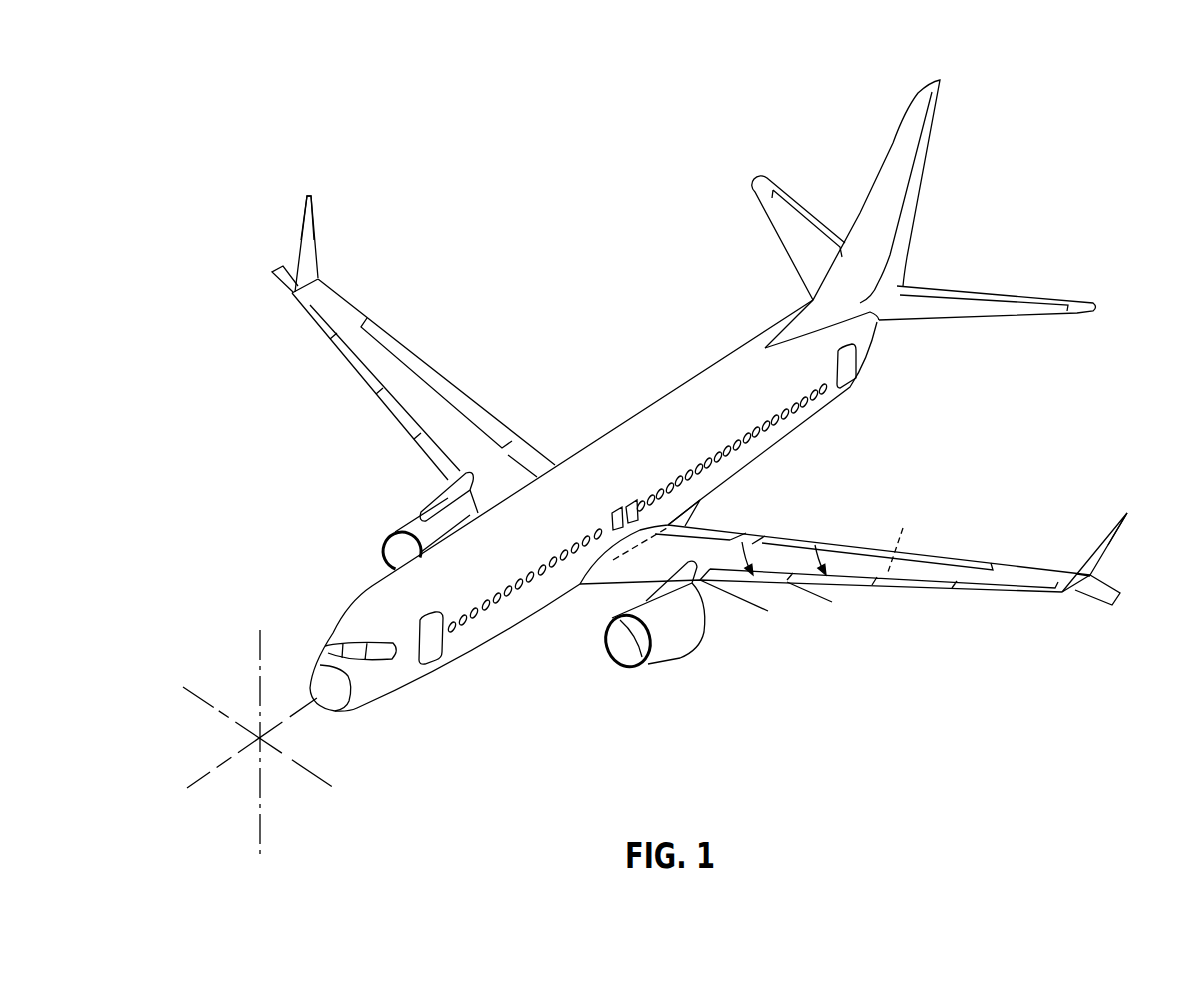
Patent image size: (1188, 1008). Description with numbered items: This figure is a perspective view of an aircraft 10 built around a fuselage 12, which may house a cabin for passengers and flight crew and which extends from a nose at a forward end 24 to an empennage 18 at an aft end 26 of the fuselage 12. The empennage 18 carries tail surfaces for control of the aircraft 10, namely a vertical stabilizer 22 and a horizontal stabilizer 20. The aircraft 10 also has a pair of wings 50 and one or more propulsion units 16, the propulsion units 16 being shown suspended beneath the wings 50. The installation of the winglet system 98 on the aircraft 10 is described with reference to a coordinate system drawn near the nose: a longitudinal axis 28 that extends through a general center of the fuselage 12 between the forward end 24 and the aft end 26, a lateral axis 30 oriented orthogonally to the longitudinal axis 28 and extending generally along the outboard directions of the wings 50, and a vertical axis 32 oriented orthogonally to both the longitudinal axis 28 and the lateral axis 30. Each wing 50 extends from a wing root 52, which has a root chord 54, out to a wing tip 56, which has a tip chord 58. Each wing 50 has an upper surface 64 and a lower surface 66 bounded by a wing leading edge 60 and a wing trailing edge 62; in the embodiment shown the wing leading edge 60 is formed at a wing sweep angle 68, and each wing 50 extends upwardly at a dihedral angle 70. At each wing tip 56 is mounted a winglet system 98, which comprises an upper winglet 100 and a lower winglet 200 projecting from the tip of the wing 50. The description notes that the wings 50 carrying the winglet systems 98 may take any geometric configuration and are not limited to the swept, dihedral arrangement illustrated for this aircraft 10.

The aircraft 10 is at (505, 156).
The fuselage 12 is at (363, 602).
The propulsion unit 16 is at (625, 663).
The empennage 18 is at (905, 268).
The horizontal stabilizer 20 is at (1030, 322).
The vertical stabilizer 22 is at (902, 113).
The forward end 24 is at (353, 712).
The aft end 26 is at (868, 352).
The longitudinal axis 28 is at (208, 773).
The lateral axis 30 is at (213, 708).
The vertical axis 32 is at (258, 688).
The wing 50 is at (375, 393).
The wing root 52 is at (692, 508).
The root chord 54 is at (610, 570).
The wing tip 56 is at (318, 280).
The tip chord 58 is at (305, 198).
The wing leading edge 60 is at (925, 588).
The wing trailing edge 62 is at (953, 560).
The upper surface 64 is at (782, 555).
The lower surface 66 is at (902, 537).
The wing sweep angle 68 is at (819, 612).
The dihedral angle 70 is at (744, 612).
The winglet system 98 is at (1110, 537).
The upper winglet 100 is at (292, 245).
The lower winglet 200 is at (277, 288).